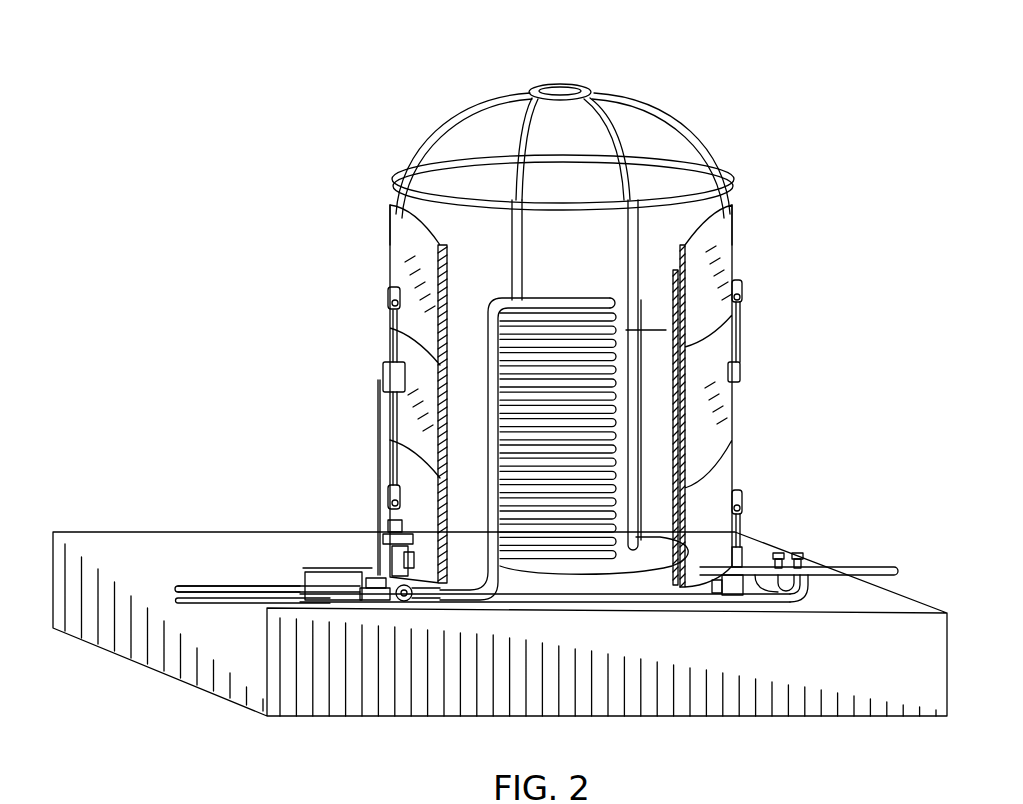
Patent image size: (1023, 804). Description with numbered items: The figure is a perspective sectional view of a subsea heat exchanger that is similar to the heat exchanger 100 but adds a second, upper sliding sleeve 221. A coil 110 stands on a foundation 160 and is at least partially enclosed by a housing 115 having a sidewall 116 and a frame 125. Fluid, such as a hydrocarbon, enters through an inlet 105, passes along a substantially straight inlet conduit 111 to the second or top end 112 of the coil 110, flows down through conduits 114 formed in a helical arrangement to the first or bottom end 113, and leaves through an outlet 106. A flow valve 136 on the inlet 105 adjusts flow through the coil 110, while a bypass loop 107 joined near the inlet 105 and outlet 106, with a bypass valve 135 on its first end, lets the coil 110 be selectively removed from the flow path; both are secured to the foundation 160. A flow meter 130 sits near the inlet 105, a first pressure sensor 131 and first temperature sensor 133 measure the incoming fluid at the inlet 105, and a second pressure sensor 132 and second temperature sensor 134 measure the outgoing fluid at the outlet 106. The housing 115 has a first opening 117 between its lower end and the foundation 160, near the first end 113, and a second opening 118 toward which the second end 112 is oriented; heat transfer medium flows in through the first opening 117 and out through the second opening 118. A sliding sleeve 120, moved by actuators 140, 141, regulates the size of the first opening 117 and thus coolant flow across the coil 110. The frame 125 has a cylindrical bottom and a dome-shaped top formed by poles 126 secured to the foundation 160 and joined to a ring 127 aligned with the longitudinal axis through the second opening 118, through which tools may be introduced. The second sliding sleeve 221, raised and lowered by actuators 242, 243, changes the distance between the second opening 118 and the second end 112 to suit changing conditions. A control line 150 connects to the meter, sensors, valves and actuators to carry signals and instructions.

The heat exchanger 100 is at (748, 43).
The inlet 105 is at (222, 584).
The outlet 106 is at (880, 565).
The bypass loop 107 is at (764, 604).
The coil 110 is at (620, 407).
The inlet conduit 111 is at (495, 326).
The second end 112 is at (550, 296).
The first end 113 is at (569, 576).
The conduits 114 is at (668, 330).
The housing 115 is at (378, 228).
The sidewall 116 is at (386, 429).
The first opening 117 is at (662, 584).
The second opening 118 is at (666, 216).
The sliding sleeve 120 is at (738, 532).
The frame 125 is at (448, 128).
The poles 126 is at (604, 119).
The ring 127 is at (575, 83).
The flow meter 130 is at (325, 602).
The first pressure sensor 131 is at (372, 604).
The second pressure sensor 132 is at (779, 553).
The first temperature sensor 133 is at (394, 604).
The second temperature sensor 134 is at (800, 554).
The bypass valve 135 is at (395, 545).
The flow valve 136 is at (400, 527).
The actuator 140 is at (392, 485).
The actuator 141 is at (738, 494).
The control line 150 is at (380, 380).
The foundation 160 is at (928, 678).
The second sliding sleeve 221 is at (388, 263).
The actuator 242 is at (390, 327).
The actuator 243 is at (750, 291).